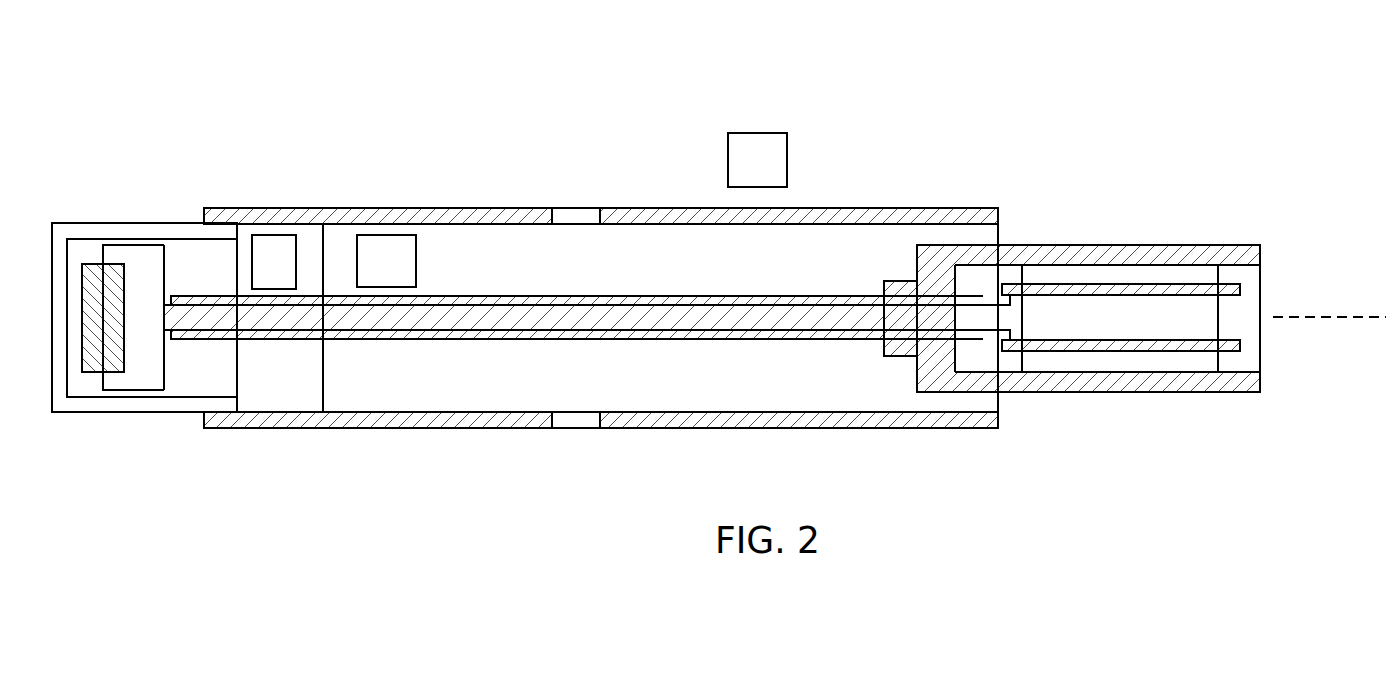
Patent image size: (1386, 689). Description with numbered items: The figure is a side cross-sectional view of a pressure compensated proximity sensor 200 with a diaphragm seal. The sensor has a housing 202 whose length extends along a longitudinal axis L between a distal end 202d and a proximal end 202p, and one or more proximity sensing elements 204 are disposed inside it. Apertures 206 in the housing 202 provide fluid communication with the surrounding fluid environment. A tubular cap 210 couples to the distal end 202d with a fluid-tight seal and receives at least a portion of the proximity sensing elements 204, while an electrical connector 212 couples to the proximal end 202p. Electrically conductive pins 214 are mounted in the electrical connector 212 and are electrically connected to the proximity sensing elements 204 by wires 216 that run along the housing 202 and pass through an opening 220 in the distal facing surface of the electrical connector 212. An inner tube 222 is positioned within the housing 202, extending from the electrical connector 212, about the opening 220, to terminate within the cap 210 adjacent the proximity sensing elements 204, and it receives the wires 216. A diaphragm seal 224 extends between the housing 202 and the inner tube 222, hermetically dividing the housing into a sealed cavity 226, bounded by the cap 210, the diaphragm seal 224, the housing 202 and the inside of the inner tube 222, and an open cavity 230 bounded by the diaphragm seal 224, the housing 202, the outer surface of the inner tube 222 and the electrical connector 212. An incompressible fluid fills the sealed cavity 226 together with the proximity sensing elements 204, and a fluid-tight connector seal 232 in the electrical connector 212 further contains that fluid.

The proximity sensor 200 is at (357, 88).
The housing 202 is at (285, 208).
The distal end 202d is at (207, 188).
The proximal end 202p is at (988, 188).
The proximity sensing elements 204 is at (87, 372).
The apertures 206 is at (580, 215).
The cap 210 is at (110, 222).
The electrical connector 212 is at (1120, 245).
The electrically conductive pins 214 is at (1137, 353).
The wires 216 is at (708, 340).
The opening 220 is at (900, 295).
The inner tube 222 is at (838, 340).
The diaphragm seal 224 is at (325, 236).
The sealed cavity 226 is at (300, 389).
The open cavity 230 is at (652, 277).
The connector seal 232 is at (1026, 362).
The longitudinal axis L is at (1336, 318).